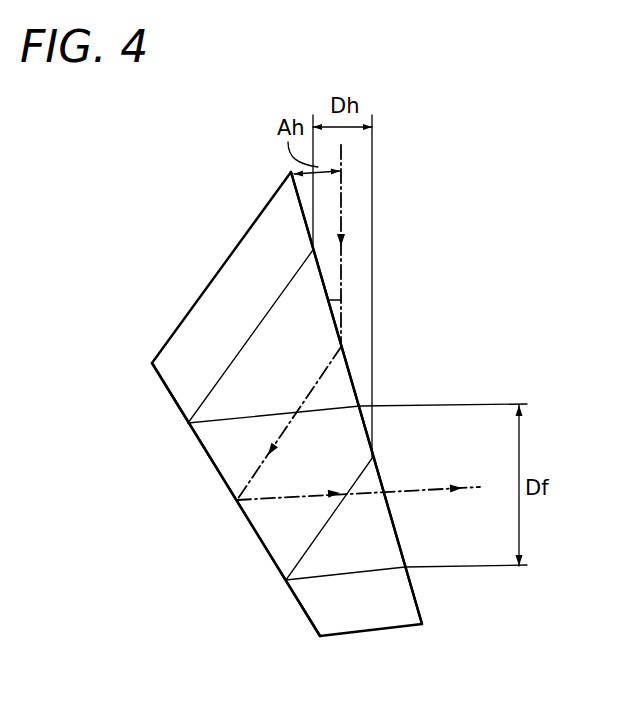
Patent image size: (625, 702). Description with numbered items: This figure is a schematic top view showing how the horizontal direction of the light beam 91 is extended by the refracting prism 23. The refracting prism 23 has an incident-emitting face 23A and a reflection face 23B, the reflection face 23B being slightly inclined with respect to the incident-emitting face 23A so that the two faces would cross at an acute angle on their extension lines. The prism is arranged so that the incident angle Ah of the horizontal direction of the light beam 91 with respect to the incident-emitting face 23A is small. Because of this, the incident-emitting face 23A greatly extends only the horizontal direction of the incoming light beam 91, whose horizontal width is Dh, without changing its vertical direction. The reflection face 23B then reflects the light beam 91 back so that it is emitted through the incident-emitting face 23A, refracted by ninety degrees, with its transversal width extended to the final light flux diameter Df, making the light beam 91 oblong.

The refracting prism 23 is at (461, 238).
The incident-emitting face 23A is at (415, 598).
The reflection face 23B is at (168, 392).
The light beam 91 is at (373, 175).